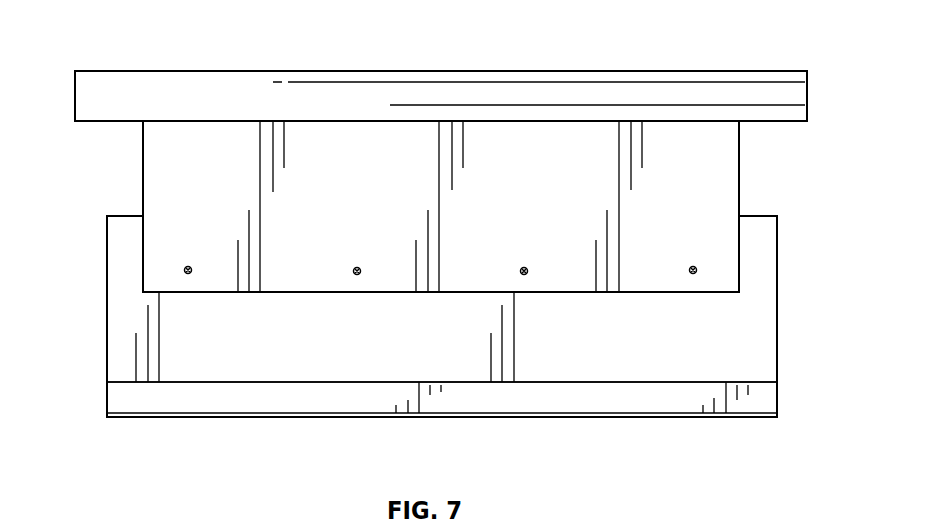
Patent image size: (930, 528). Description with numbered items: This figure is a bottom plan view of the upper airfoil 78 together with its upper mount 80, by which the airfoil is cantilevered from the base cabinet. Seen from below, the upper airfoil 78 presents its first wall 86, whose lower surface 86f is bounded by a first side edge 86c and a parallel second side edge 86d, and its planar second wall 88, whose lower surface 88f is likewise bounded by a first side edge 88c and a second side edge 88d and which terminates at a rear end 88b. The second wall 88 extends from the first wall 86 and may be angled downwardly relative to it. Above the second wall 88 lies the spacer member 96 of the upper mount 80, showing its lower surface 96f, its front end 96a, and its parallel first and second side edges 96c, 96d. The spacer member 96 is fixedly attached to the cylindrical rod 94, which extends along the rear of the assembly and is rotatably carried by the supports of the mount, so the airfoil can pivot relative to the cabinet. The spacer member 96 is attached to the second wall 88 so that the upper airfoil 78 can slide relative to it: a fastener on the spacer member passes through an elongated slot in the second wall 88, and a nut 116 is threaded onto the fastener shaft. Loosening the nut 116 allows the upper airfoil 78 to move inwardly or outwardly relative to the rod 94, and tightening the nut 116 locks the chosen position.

The upper airfoil 78 is at (103, 355).
The upper mount 80 is at (126, 152).
The first wall 86 is at (640, 400).
The first side edge 86c is at (779, 393).
The second side edge 86d is at (106, 402).
The lower surface 86f is at (322, 409).
The second wall 88 is at (765, 318).
The rear end 88b is at (762, 215).
The first side edge 88c is at (779, 232).
The second side edge 88d is at (106, 272).
The lower surface 88f is at (322, 347).
The cylindrical rod 94 is at (500, 88).
The spacer member 96 is at (238, 140).
The front end 96a is at (590, 292).
The first side edge 96c is at (740, 130).
The second side edge 96d is at (141, 160).
The lower surface 96f is at (341, 191).
The nut 116 is at (526, 266).